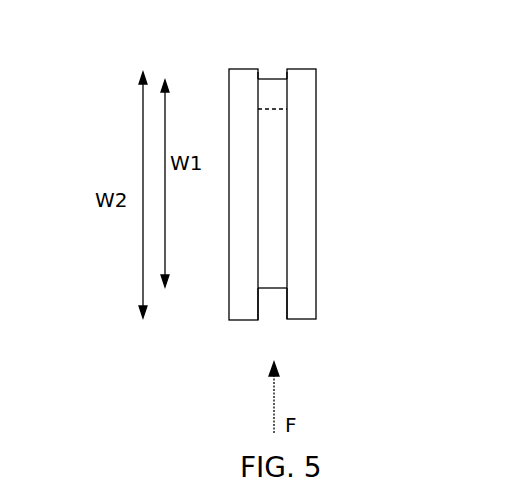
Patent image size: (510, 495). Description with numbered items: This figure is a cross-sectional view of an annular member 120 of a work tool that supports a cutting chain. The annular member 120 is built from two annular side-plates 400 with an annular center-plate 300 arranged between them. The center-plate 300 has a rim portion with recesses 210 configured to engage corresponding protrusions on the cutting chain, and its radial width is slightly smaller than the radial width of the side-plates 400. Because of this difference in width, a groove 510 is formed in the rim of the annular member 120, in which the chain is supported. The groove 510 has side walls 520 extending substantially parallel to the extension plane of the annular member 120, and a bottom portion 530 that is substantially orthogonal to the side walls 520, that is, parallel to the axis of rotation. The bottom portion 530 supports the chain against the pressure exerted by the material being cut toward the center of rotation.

The annular member 120 is at (254, 192).
The recesses 210 is at (274, 100).
The annular center-plate 300 is at (277, 237).
The annular side-plates 400 is at (316, 84).
The groove 510 is at (278, 73).
The side walls 520 is at (268, 77).
The bottom portion 530 is at (277, 77).